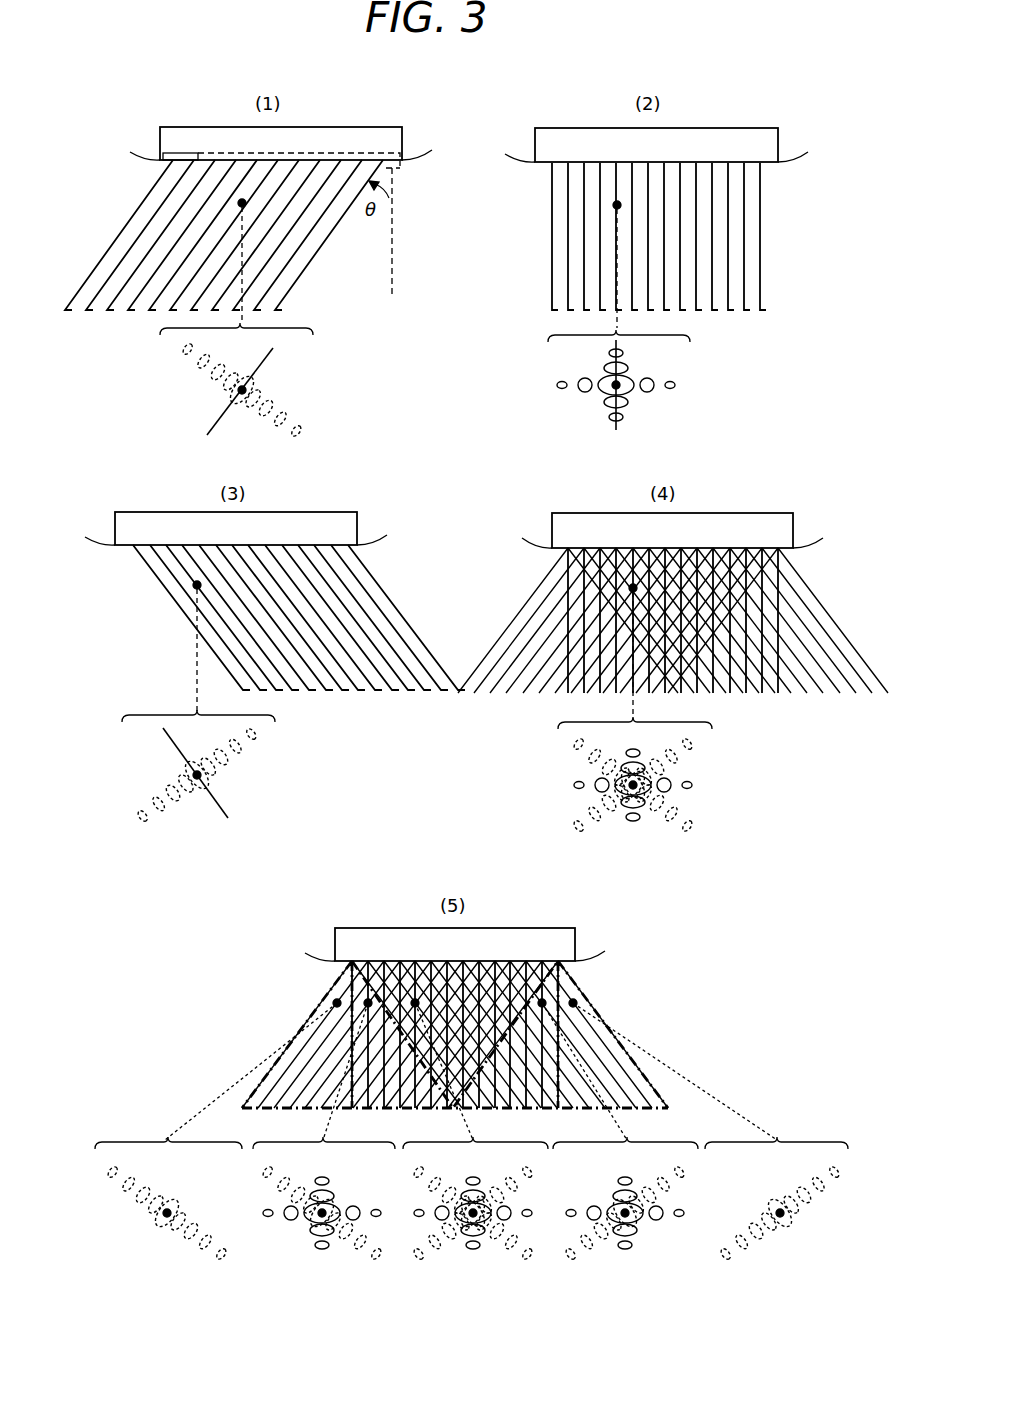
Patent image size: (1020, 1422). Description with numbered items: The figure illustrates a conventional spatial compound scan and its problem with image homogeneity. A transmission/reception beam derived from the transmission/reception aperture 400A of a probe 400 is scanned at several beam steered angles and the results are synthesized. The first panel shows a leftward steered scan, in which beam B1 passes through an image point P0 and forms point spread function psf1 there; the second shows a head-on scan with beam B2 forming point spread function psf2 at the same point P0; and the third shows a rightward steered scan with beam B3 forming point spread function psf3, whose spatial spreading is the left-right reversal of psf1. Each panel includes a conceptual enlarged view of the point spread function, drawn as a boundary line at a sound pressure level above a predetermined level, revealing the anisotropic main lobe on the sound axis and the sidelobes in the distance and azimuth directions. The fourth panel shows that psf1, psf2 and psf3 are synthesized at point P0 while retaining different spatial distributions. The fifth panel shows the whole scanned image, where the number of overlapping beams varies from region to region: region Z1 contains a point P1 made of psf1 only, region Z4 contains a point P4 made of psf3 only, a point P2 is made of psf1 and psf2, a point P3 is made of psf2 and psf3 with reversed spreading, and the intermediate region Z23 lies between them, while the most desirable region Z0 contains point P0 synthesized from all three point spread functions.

The probe 400 is at (165, 141).
The transmission/reception aperture 400A is at (186, 152).
The point P0 is at (240, 203).
The point P1 is at (335, 1003).
The point P2 is at (366, 1002).
The point P3 is at (544, 1002).
The point P4 is at (576, 1003).
The beam B1 is at (195, 263).
The beam B2 is at (612, 277).
The beam B3 is at (245, 655).
The point spread function psf1 is at (270, 403).
The point spread function psf2 is at (630, 396).
The point spread function psf3 is at (215, 765).
The region Z0 is at (478, 961).
The region Z1 is at (262, 1080).
The region Z4 is at (648, 1080).
The intermediate overlap region Z23 is at (410, 1108).